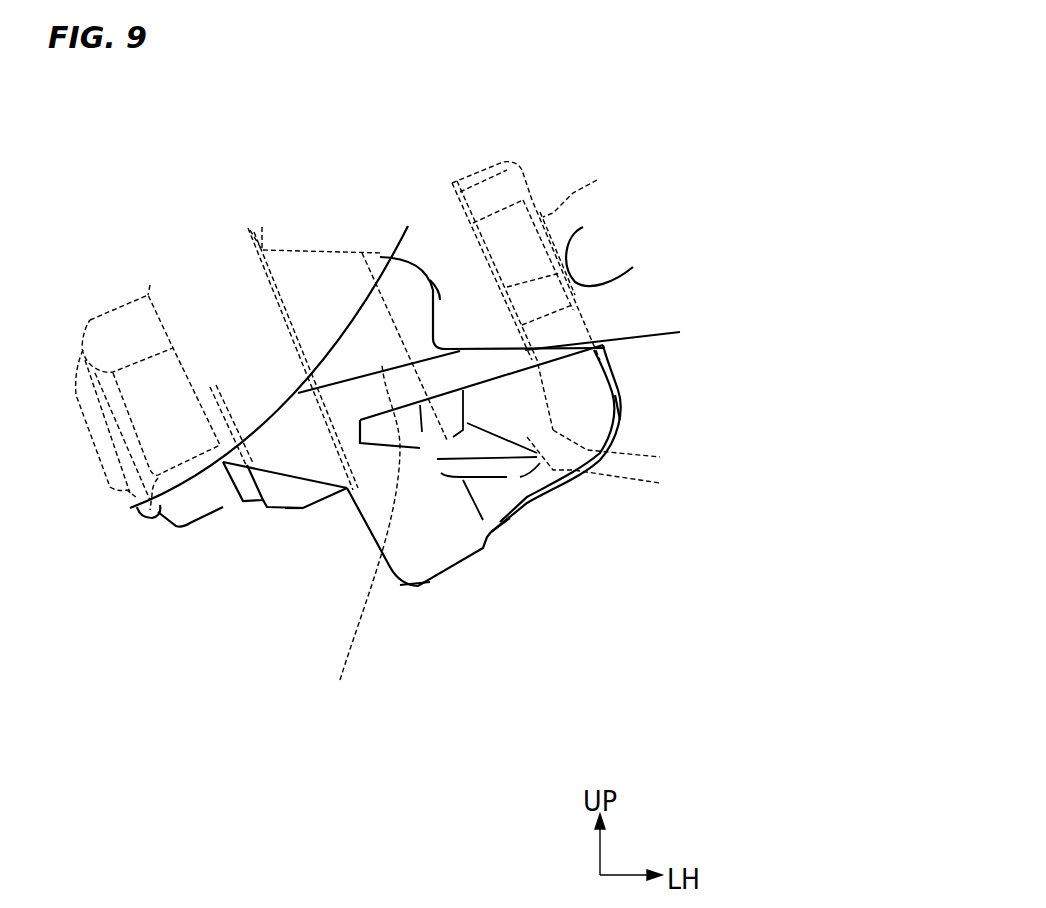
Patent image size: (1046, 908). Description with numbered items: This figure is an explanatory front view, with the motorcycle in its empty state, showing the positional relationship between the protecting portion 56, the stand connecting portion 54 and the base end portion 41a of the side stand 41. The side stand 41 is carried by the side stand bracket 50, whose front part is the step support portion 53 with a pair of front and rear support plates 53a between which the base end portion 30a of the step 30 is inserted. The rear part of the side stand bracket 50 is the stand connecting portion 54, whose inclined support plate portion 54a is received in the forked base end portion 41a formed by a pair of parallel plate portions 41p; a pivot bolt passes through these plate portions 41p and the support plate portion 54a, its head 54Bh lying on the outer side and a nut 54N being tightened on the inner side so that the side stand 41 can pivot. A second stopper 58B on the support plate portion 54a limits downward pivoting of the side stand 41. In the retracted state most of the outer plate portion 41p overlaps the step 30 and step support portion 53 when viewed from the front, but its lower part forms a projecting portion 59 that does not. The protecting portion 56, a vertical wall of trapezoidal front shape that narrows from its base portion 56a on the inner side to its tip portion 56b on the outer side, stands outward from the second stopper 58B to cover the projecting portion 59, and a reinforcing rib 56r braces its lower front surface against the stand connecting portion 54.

The step 30 is at (490, 367).
The base end portion of the step 30a is at (663, 338).
The side stand 41 is at (279, 570).
The base end portion of the side stand 41a is at (280, 505).
The plate portion 41p is at (298, 512).
The side stand bracket 50 is at (422, 587).
The step support portion 53 is at (558, 280).
The support plate 53a is at (383, 273).
The stand connecting portion 54 is at (261, 488).
The support plate portion 54a is at (261, 488).
The nut 54N is at (223, 507).
The head of the pivot bolt 54Bh is at (556, 295).
The protecting portion 56 is at (580, 477).
The base portion of the protecting portion 56a is at (481, 504).
The tip portion of the protecting portion 56b is at (620, 416).
The reinforcing rib 56r is at (510, 465).
The second stopper 58B is at (453, 570).
The projecting portion 59 is at (660, 457).